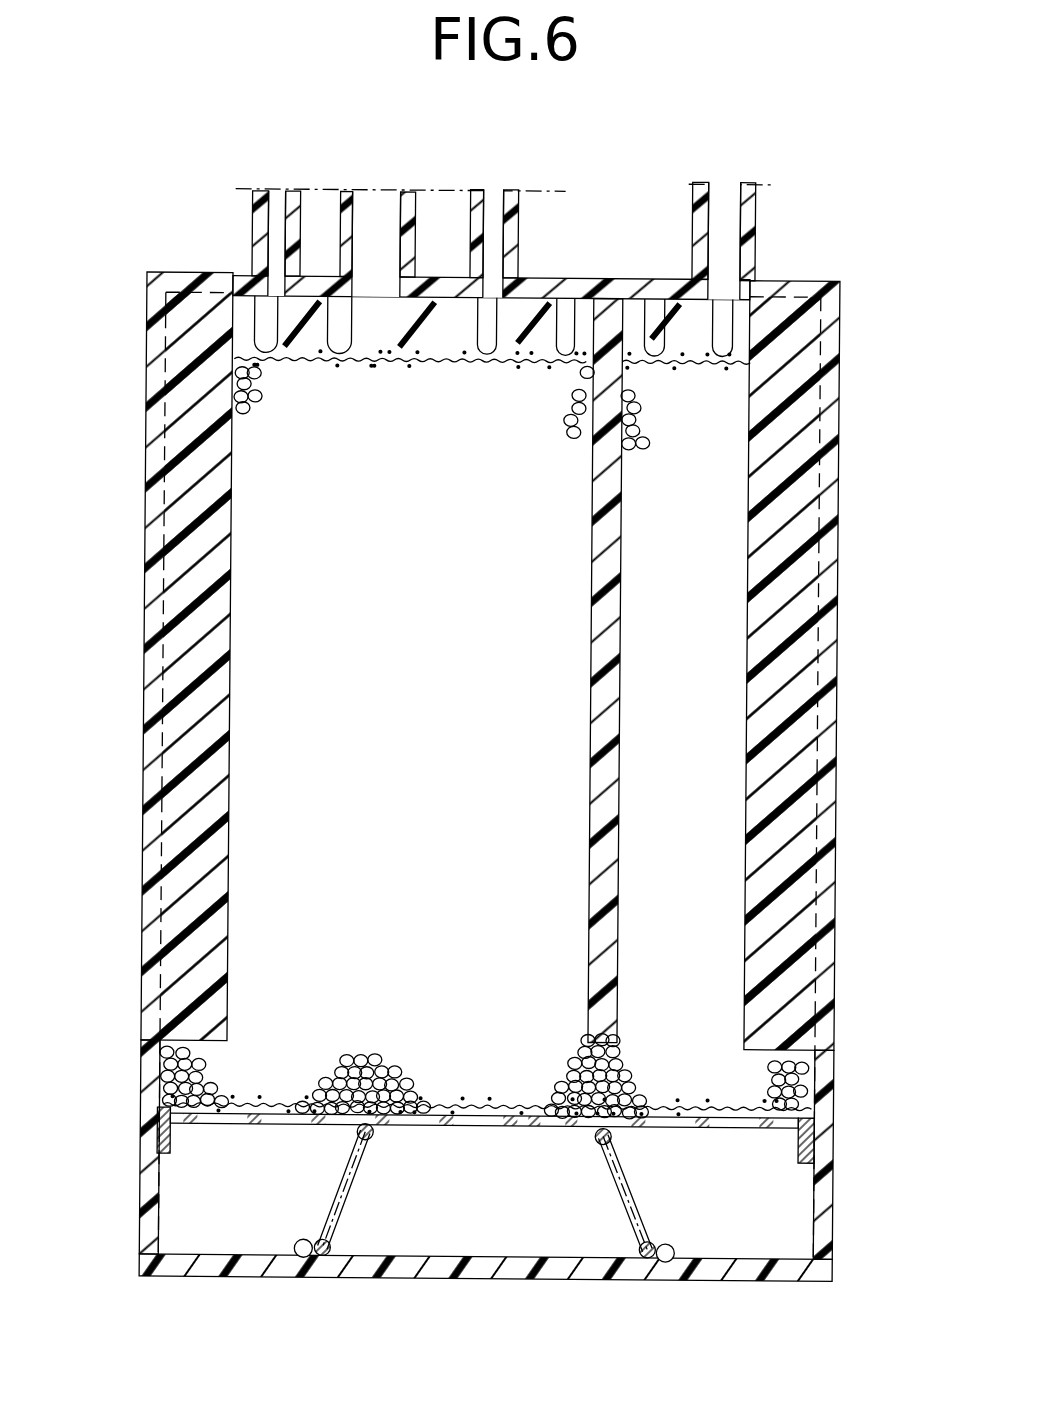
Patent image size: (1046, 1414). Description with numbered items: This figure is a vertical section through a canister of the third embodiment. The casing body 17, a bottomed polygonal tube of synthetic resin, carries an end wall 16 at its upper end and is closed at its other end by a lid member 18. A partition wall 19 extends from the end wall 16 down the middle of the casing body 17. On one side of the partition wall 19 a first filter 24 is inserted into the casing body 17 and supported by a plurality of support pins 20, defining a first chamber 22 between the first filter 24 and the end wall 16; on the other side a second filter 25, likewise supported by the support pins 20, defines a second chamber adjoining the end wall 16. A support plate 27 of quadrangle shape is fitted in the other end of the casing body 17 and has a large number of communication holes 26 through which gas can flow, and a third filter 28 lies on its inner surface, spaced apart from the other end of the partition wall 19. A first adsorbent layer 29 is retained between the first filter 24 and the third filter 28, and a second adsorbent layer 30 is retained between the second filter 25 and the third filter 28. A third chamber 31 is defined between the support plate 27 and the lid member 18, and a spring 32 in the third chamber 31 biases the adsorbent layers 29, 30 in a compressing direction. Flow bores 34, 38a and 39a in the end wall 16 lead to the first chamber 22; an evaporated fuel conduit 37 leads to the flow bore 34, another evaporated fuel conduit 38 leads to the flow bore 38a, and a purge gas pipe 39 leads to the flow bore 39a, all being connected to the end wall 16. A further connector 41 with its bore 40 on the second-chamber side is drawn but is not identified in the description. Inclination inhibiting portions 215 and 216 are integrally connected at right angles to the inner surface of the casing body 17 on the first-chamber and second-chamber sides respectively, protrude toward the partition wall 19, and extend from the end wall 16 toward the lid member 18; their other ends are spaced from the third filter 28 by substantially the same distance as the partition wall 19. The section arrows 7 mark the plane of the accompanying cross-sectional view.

The section line 7- 7 is at (93, 330).
The end wall 16 is at (646, 292).
The casing body 17 is at (840, 704).
The lid member 18 is at (455, 1266).
The partition wall 19 is at (594, 711).
The support pins 20 is at (335, 350).
The inclination inhibiting portion 215 is at (205, 848).
The inclination inhibiting portion 216 is at (760, 776).
The first chamber 22 is at (538, 317).
The first filter 24 is at (458, 362).
The second filter 25 is at (694, 362).
The communication holes 26 is at (568, 1125).
The support plate 27 is at (466, 1125).
The third filter 28 is at (470, 1107).
The first adsorbent layer 29 is at (438, 724).
The second adsorbent layer 30 is at (702, 674).
The third chamber 31 is at (727, 1224).
The spring 32 is at (368, 1140).
The flow bore 34 is at (373, 308).
The evaporated fuel conduit 37 is at (410, 200).
The evaporated fuel conduit 38 is at (252, 212).
The flow bore 38a is at (275, 262).
The purge gas pipe 39 is at (518, 198).
The flow bore 39a is at (493, 262).
The terminal bore 40 is at (728, 275).
The terminal post 41 is at (757, 194).